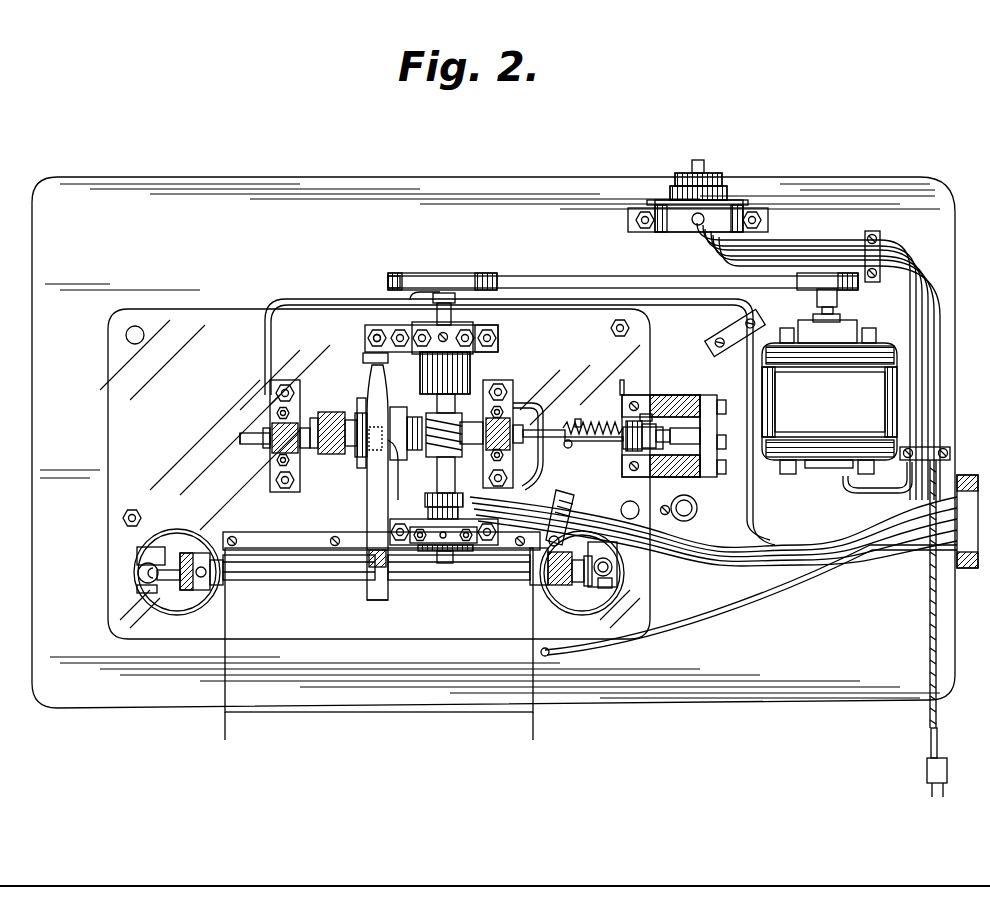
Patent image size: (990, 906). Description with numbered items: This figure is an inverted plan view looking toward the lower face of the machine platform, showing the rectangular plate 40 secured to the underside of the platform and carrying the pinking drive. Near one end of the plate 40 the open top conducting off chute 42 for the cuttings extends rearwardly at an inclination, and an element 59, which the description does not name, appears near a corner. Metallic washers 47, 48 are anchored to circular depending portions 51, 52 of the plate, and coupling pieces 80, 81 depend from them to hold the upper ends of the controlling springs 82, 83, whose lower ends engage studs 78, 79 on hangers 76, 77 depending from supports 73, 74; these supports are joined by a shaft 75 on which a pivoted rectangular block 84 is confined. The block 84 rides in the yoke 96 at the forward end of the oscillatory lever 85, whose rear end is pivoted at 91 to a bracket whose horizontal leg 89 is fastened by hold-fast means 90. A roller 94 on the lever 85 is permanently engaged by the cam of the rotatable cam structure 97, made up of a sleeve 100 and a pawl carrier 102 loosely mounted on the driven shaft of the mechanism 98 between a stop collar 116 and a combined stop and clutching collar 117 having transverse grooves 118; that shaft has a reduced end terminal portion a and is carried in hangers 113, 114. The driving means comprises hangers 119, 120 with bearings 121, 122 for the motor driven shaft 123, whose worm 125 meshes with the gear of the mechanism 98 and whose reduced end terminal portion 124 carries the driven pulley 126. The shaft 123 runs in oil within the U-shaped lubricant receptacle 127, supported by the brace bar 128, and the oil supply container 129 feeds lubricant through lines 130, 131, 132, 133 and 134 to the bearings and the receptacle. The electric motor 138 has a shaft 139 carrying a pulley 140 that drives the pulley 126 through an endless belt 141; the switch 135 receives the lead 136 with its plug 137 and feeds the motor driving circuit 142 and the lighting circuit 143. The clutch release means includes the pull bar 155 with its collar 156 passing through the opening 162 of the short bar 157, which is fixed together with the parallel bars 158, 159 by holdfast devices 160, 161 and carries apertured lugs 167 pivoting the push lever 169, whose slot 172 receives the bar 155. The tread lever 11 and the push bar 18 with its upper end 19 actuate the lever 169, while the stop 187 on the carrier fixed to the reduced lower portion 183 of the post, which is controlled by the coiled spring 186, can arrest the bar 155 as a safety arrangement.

The tread lever 11 is at (262, 447).
The push bar 18 is at (570, 447).
The upper end of push bar 19 is at (578, 419).
The rectangular plate 40 is at (207, 315).
The conducting off chute 42 is at (226, 735).
The metallic washer 47 is at (178, 531).
The metallic washer 48 is at (600, 585).
The circular depending portion 51 is at (152, 596).
The circular depending portion 52 is at (612, 568).
The mounting hole 59 is at (139, 330).
The depending support 73 is at (200, 592).
The depending support 74 is at (535, 590).
The shaft 75 is at (290, 573).
The hanger 76 is at (185, 595).
The hanger 77 is at (576, 585).
The stud 78 is at (160, 585).
The stud 79 is at (590, 590).
The coupling piece 80 is at (137, 553).
The coupling piece 81 is at (618, 548).
The controlling spring 82 is at (140, 580).
The controlling spring 83 is at (610, 585).
The pivoted rectangular block 84 is at (378, 600).
The oscillatory lever 85 is at (370, 400).
The horizontal leg 89 is at (366, 327).
The hold-fast means 90 is at (368, 340).
The pivotal connection 91 is at (365, 360).
The roller 94 is at (396, 415).
The yoke 96 is at (366, 580).
The rotatable cam structure 97 is at (385, 495).
The driven operating mechanism 98 is at (430, 427).
The sleeve 100 is at (350, 446).
The pawl carrier 102 is at (333, 428).
The hanger 113 is at (284, 381).
The hanger 114 is at (510, 392).
The stop collar 116 is at (430, 495).
The combined stop and clutching collar 117 is at (358, 455).
The transverse grooves 118 is at (252, 434).
The hanger 119 is at (498, 334).
The hanger 120 is at (498, 528).
The bearing 121 is at (505, 300).
The bearing 122 is at (447, 563).
The motor driven shaft 123 is at (420, 388).
The reduced end terminal portion 124 is at (410, 300).
The worm 125 is at (437, 466).
The driven pulley 126 is at (450, 273).
The lubricant receiving receptacle 127 is at (498, 381).
The brace bar 128 is at (456, 300).
The lubricant supply container 129 is at (957, 565).
The lubricant conducting line 130 is at (835, 492).
The lubricant conducting line 131 is at (765, 550).
The lubricant conducting line 132 is at (815, 552).
The lubricant conducting line 133 is at (862, 550).
The lubricant conducting line 134 is at (838, 575).
The electrical controlling switch 135 is at (745, 208).
The lead 136 is at (930, 648).
The plug 137 is at (927, 770).
The electric motor 138 is at (829, 397).
The motor shaft 139 is at (840, 302).
The pulley 140 is at (826, 273).
The endless belt 141 is at (611, 286).
The motor driving circuit 142 is at (910, 318).
The lighting circuit 143 is at (925, 290).
The pull bar 155 is at (545, 428).
The collar 156 is at (577, 426).
The short bar 157 is at (625, 395).
The bar 158 is at (683, 405).
The bar 159 is at (702, 470).
The holdfast device 160 is at (648, 430).
The holdfast device 161 is at (575, 494).
The opening 162 is at (626, 395).
The apertured lugs 167 is at (638, 421).
The push lever 169 is at (652, 424).
The slot 172 is at (648, 449).
The reduced lower portion 183 is at (697, 513).
The coiled controlling spring 186 is at (711, 477).
The stop 187 is at (710, 398).
The reduced end terminal portion a is at (248, 405).